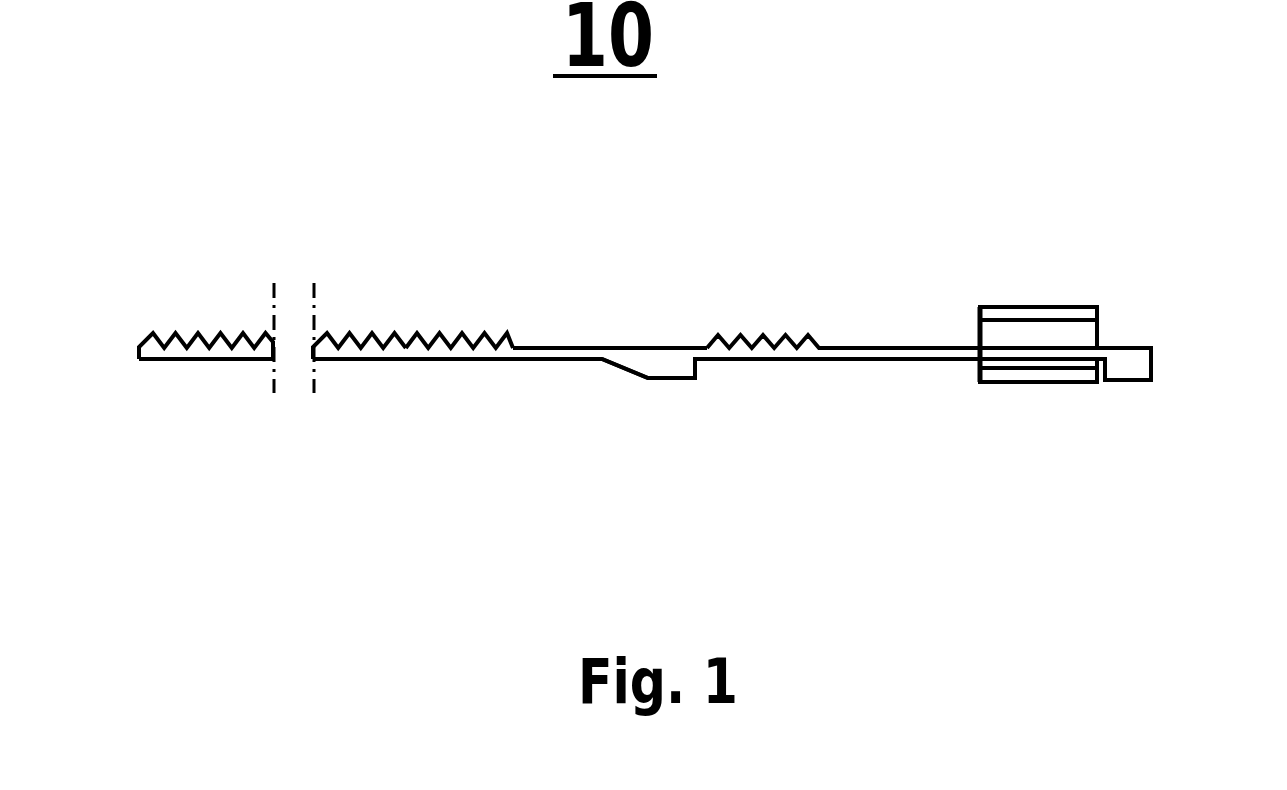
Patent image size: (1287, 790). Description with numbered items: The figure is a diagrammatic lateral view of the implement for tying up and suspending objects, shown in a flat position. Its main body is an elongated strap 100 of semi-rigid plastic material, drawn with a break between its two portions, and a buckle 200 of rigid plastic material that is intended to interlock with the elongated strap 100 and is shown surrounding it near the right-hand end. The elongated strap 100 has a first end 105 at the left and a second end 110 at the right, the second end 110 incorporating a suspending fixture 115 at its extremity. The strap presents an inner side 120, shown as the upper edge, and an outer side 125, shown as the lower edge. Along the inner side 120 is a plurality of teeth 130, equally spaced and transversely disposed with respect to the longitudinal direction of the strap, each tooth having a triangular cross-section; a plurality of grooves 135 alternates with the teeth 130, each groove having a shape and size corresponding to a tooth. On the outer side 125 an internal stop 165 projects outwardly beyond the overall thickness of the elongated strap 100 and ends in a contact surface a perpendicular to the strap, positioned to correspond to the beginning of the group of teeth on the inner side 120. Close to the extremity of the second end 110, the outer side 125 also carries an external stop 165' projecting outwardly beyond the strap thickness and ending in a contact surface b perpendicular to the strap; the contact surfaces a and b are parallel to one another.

The elongated strap 100 is at (432, 368).
The first end 105 is at (183, 340).
The second end 110 is at (1082, 357).
The suspending fixture 115 is at (1153, 367).
The inner side 120 is at (640, 333).
The outer side 125 is at (910, 370).
The plurality of teeth 130 is at (447, 330).
The plurality of grooves 135 is at (360, 338).
The internal stop 165 is at (648, 432).
The external stop 165' is at (1183, 306).
The buckle 200 is at (1023, 388).
The contact surface a is at (698, 368).
The contact surface b is at (1102, 373).